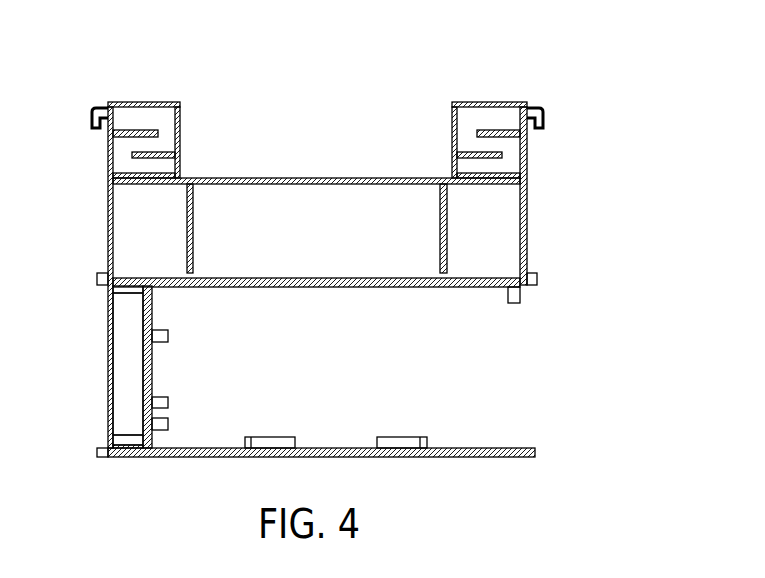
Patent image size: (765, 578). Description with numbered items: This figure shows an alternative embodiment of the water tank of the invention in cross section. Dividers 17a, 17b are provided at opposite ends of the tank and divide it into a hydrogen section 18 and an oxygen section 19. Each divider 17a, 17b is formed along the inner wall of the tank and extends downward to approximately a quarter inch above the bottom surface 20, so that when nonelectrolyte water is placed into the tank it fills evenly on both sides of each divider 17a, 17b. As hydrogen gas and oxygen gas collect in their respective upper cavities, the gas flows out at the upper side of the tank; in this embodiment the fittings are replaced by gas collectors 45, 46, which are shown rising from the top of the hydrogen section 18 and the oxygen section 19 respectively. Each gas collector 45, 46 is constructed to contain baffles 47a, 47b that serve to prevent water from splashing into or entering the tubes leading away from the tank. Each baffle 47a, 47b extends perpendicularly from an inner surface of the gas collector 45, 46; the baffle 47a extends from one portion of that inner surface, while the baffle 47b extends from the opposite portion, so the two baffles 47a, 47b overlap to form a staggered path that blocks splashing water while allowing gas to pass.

The gas collector 45 is at (142, 102).
The gas collector 46 is at (489, 102).
The baffle 47a is at (148, 128).
The baffle 47b is at (137, 154).
The hydrogen section 18 is at (126, 213).
The oxygen section 19 is at (512, 212).
The divider 17a is at (194, 236).
The divider 17b is at (443, 236).
The bottom surface 20 is at (400, 287).